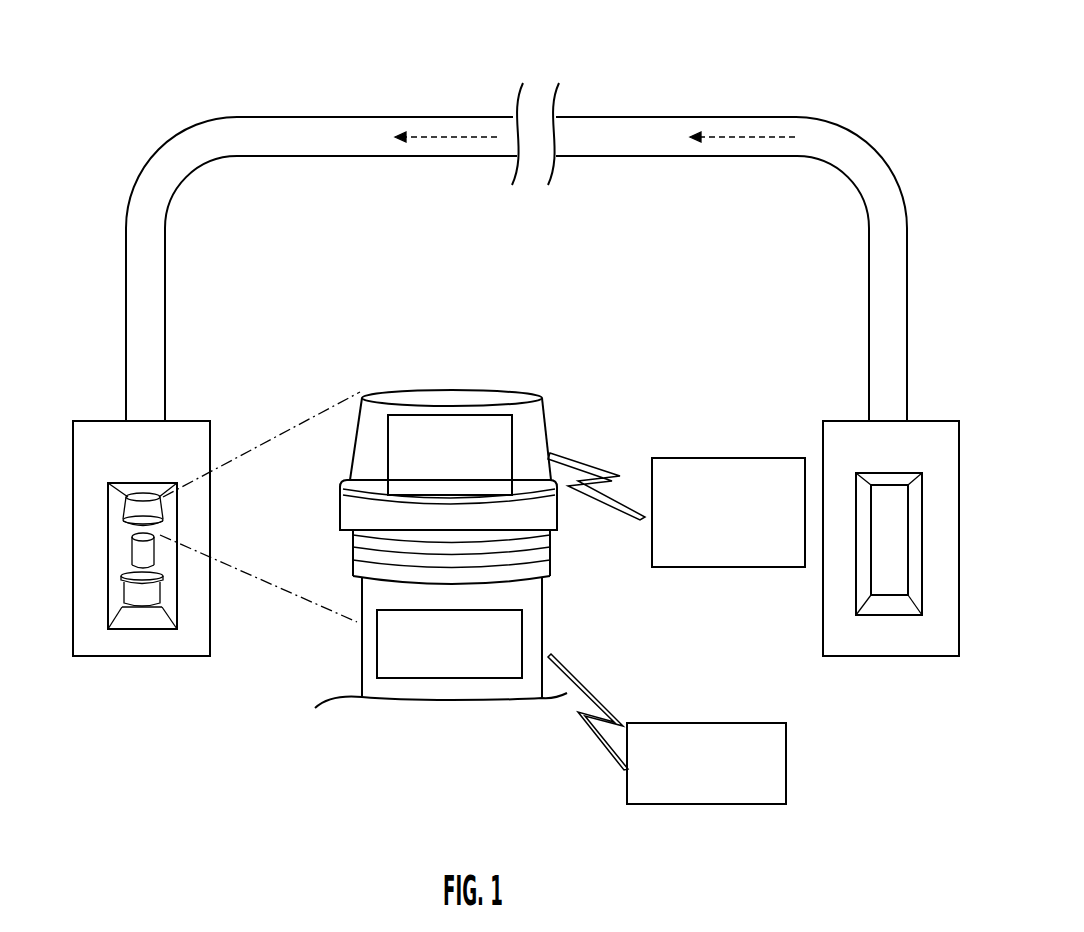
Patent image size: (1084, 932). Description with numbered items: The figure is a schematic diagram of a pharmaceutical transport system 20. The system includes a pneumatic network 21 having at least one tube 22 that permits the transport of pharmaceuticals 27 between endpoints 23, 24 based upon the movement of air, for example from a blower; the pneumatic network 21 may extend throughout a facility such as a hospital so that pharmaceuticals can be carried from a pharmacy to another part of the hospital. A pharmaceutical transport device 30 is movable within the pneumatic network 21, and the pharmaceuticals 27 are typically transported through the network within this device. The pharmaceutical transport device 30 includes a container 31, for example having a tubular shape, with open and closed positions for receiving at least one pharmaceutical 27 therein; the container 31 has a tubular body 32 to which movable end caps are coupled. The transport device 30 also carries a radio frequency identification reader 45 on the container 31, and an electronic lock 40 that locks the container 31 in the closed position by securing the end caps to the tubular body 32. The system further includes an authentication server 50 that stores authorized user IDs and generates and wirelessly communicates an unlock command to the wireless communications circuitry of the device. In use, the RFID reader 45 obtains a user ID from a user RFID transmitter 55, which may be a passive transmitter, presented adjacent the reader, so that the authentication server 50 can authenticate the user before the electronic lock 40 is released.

The pharmaceutical transport system 20 is at (112, 80).
The pneumatic network 21 is at (342, 110).
The tube 22 is at (126, 228).
The endpoint 23 is at (103, 657).
The endpoint 24 is at (853, 657).
The pharmaceutical 27 is at (147, 553).
The pharmaceutical transport device 30 is at (105, 511).
The container 31 is at (106, 538).
The tubular body 32 is at (542, 606).
The electronic lock 40 is at (425, 418).
The RFID reader 45 is at (377, 656).
The authentication server 50 is at (677, 580).
The user RFID transmitter 55 is at (787, 778).